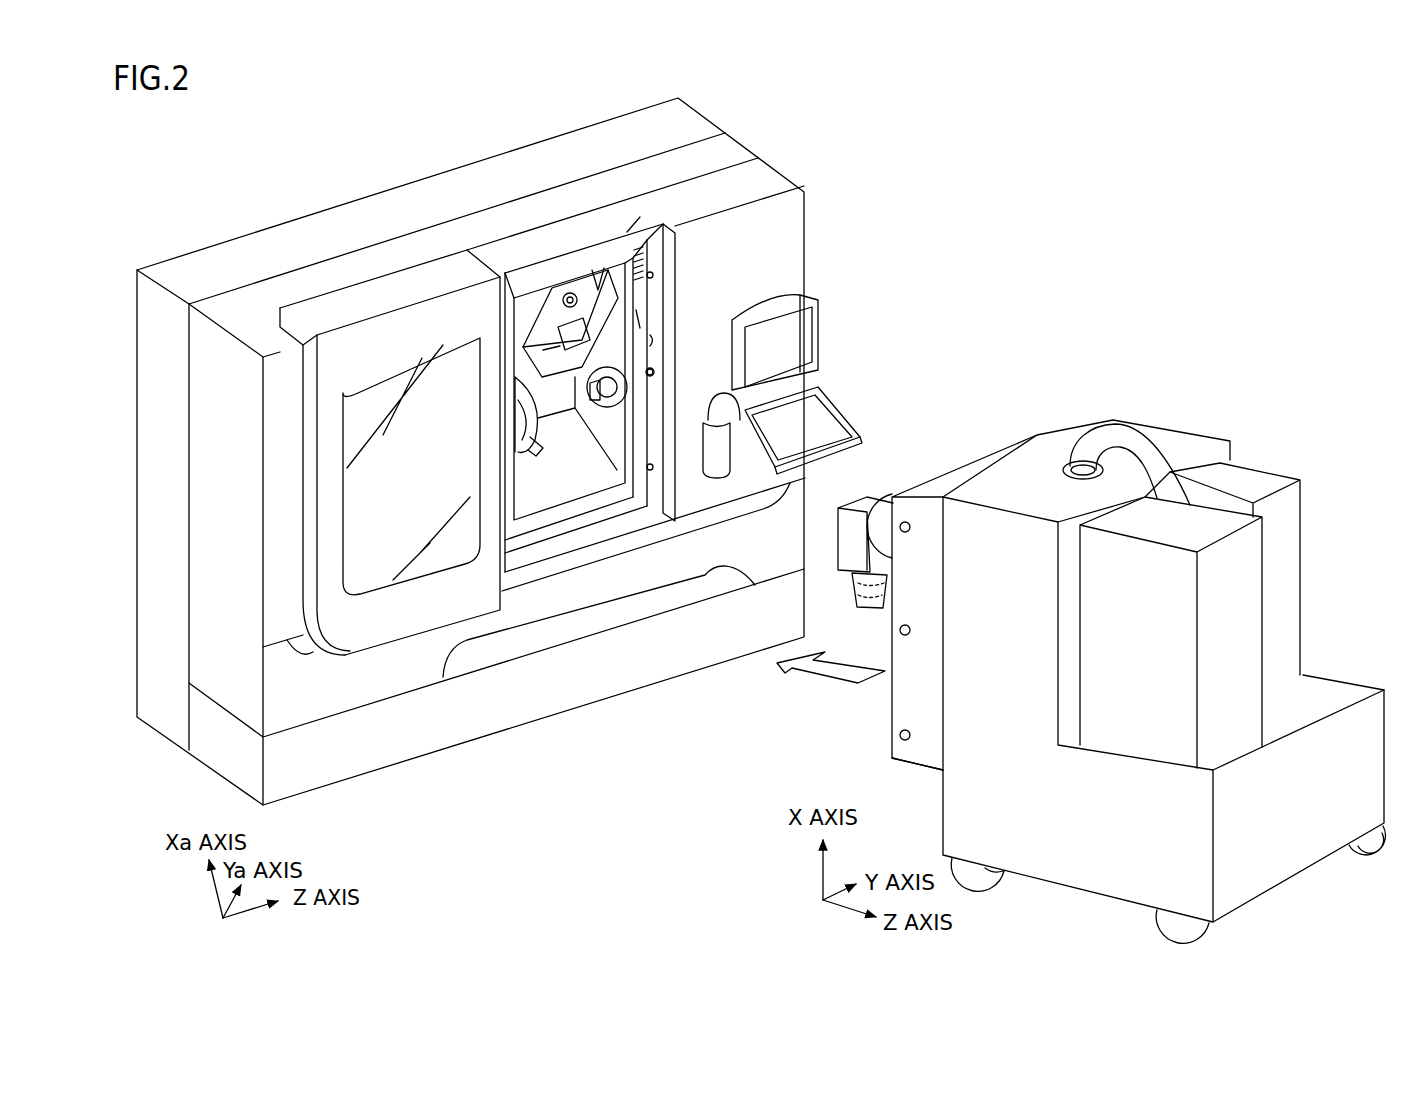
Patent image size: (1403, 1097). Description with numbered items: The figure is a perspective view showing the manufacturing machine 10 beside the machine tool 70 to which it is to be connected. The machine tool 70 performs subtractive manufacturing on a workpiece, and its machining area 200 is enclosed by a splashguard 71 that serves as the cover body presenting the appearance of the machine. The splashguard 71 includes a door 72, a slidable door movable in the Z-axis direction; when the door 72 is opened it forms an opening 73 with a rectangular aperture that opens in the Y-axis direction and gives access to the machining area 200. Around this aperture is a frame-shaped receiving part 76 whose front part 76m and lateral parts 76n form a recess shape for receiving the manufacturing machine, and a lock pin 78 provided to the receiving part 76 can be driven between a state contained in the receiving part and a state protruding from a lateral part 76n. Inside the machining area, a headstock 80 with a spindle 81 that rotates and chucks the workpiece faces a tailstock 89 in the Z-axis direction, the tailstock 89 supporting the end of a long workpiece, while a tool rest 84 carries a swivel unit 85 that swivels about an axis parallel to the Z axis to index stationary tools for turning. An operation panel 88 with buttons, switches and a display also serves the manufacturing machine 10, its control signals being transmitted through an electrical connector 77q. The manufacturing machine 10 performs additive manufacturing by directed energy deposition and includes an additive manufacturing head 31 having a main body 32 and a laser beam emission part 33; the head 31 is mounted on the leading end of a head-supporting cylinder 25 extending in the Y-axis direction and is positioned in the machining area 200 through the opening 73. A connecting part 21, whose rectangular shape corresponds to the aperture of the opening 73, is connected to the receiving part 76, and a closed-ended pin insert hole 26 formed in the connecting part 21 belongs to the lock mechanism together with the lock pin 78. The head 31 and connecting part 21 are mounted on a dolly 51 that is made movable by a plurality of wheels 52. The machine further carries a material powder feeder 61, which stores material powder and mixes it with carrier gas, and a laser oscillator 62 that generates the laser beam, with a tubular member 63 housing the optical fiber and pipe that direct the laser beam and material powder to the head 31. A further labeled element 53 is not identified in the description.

The machine tool 70 is at (230, 205).
The door 72 is at (410, 327).
The headstock 80 is at (513, 380).
The splashguard 71 is at (510, 257).
The swivel unit 85 is at (543, 310).
The tool rest 84 is at (583, 275).
The opening 73 is at (600, 262).
The electrical connector 77q is at (627, 232).
The receiving part 76 is at (658, 280).
The front part 76m is at (638, 318).
The lateral parts 76n is at (650, 343).
The operation panel 88 is at (815, 327).
The lock pin 78 is at (657, 373).
The spindle 81 is at (518, 432).
The machining area 200 is at (538, 473).
The tailstock 89 is at (600, 410).
The manufacturing machine 10 is at (1089, 394).
The tubular member 63 is at (1128, 440).
The material powder feeder 61 is at (1200, 525).
The laser oscillator 62 is at (1262, 485).
The additive manufacturing head 31 is at (871, 480).
The head-supporting cylinder 25 is at (897, 487).
The main body 32 is at (850, 557).
The laser beam emission part 33 is at (878, 610).
The pin insert hole 26 is at (900, 735).
The connecting part 21 is at (914, 773).
The wheels 52 is at (976, 878).
The dolly 51 is at (1066, 860).
The caster 53 is at (1147, 813).